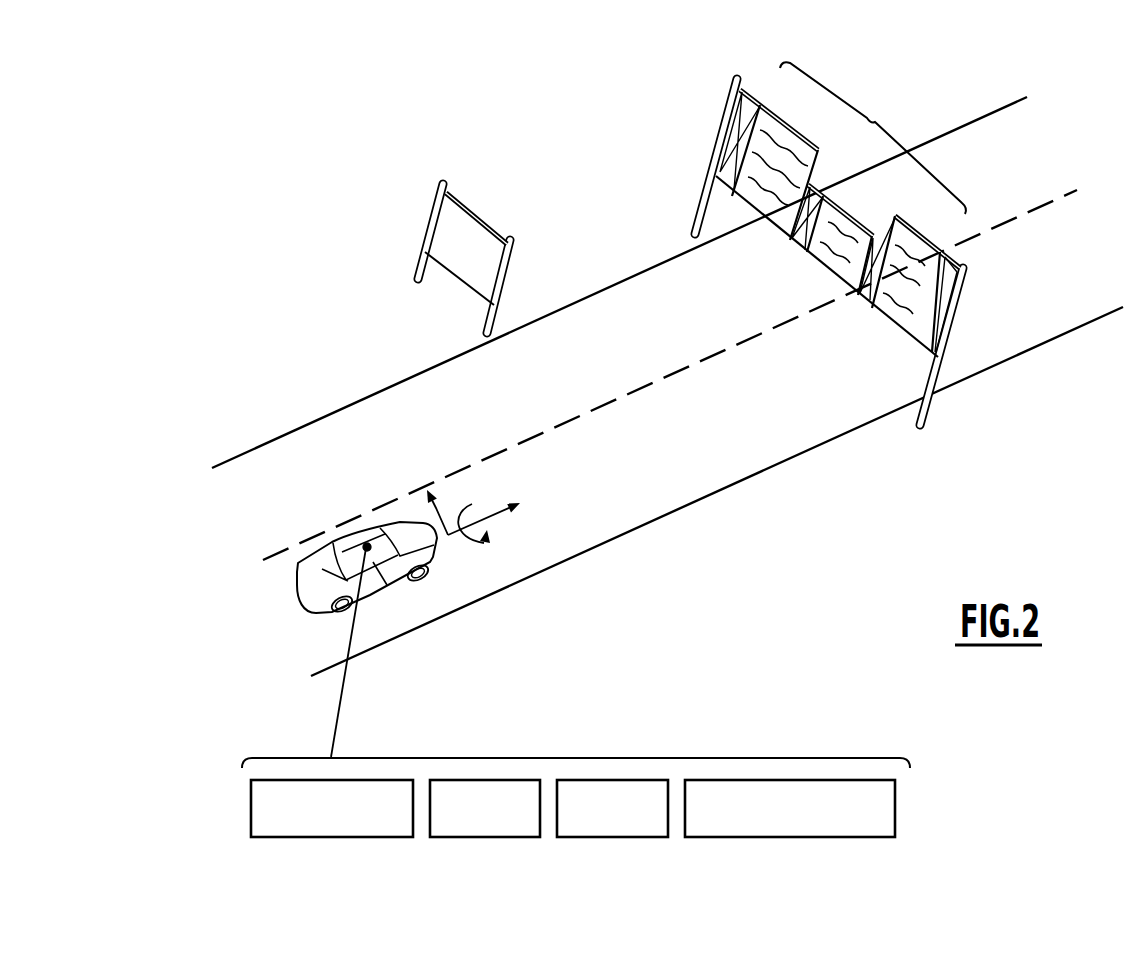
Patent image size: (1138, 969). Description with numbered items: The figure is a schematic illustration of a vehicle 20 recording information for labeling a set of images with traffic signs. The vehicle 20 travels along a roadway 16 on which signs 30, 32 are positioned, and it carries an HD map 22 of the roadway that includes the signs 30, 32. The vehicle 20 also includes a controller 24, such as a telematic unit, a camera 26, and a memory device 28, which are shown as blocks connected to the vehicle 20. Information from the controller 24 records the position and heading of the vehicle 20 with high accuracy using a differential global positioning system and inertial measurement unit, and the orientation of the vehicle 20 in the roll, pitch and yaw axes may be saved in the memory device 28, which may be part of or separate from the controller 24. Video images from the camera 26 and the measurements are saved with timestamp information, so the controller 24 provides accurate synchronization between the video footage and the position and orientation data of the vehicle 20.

The roadway 16 is at (343, 438).
The vehicle 20 is at (310, 587).
The HD map 22 is at (609, 838).
The controller 24 is at (303, 838).
The camera 26 is at (483, 838).
The memory device 28 is at (738, 838).
The sign 30 is at (441, 234).
The sign 32 is at (870, 120).